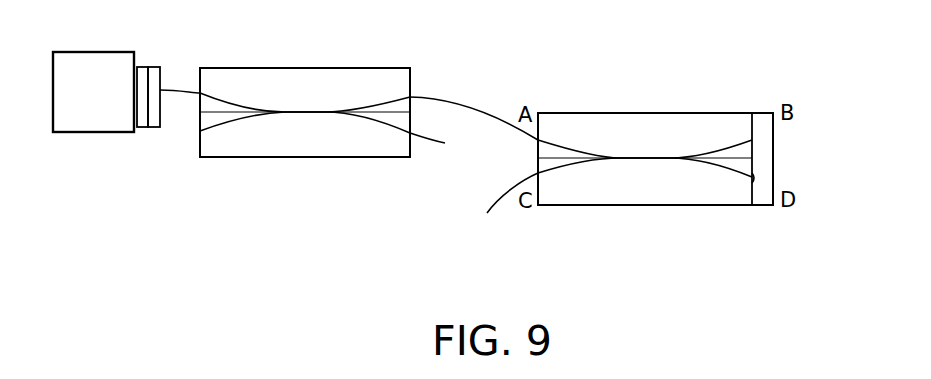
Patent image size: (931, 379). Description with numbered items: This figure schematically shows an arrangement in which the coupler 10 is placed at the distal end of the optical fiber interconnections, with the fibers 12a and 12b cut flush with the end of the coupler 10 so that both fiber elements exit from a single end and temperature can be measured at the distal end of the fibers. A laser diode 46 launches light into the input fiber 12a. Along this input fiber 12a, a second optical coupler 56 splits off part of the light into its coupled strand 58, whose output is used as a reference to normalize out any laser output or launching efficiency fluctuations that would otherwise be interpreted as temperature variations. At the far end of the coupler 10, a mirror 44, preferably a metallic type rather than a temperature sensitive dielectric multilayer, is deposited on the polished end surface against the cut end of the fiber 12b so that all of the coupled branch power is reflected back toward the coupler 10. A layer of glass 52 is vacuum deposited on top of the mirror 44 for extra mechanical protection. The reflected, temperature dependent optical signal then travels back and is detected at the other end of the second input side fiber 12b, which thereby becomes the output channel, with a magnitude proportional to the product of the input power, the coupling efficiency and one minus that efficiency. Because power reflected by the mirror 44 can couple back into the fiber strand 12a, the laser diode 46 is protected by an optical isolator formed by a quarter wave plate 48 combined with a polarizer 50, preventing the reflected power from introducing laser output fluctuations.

The coupler 10 is at (684, 208).
The input fiber 12a is at (475, 108).
The second input side fiber 12b is at (502, 200).
The mirror 44 is at (755, 182).
The laser diode 46 is at (117, 110).
The quarter wave plate 48 is at (153, 67).
The polarizer 50 is at (137, 118).
The layer of glass 52 is at (773, 152).
The second optical coupler 56 is at (283, 160).
The coupled strand 58 is at (431, 137).